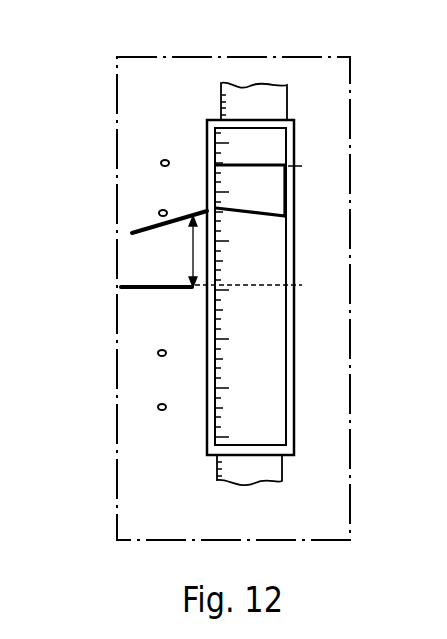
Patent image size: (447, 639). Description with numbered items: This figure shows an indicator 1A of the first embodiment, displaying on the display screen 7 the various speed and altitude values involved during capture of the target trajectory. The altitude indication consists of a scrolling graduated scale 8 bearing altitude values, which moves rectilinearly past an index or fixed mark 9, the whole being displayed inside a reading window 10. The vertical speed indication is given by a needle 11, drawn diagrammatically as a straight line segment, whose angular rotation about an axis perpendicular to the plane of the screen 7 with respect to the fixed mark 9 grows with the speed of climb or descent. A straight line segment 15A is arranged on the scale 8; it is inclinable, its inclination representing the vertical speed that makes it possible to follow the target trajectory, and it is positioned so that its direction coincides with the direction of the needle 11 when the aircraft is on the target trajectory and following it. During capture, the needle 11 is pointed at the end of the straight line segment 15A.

The measuring arrangement 1A is at (108, 103).
The display screen 7 is at (350, 437).
The scrolling graduated scale 8 is at (272, 474).
The fixed mark 9 is at (138, 292).
The reading window 10 is at (292, 387).
The needle 11 is at (141, 239).
The straight line segment 15A is at (257, 217).